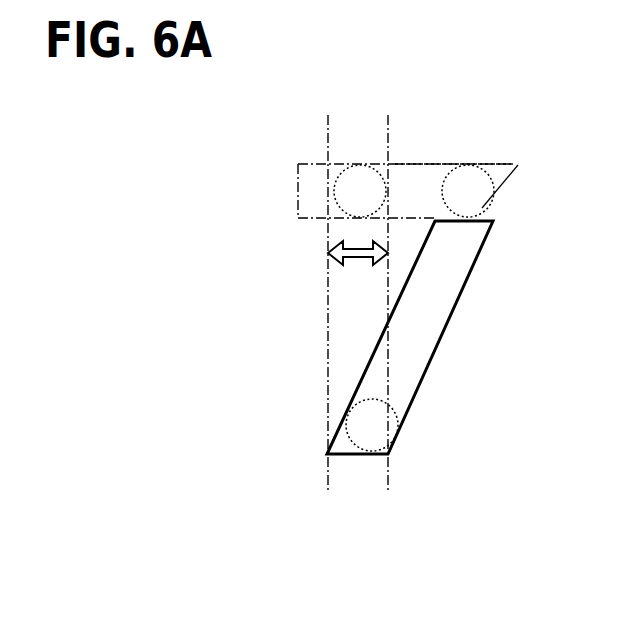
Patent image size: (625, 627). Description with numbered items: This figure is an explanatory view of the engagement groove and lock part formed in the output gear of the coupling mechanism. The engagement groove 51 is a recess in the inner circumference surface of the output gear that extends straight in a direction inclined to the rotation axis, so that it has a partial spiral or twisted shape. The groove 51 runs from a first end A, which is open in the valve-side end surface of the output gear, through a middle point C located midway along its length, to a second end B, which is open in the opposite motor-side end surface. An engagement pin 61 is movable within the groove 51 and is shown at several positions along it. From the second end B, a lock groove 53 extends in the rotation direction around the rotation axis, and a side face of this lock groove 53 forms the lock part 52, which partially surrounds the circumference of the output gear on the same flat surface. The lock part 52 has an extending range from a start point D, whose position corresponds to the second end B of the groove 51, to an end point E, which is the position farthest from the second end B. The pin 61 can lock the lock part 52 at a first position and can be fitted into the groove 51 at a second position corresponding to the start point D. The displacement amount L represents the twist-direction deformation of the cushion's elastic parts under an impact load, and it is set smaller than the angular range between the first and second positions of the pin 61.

The engagement groove 51 is at (425, 364).
The lock part 52 is at (337, 218).
The lock groove 53 is at (430, 162).
The engagement pin 61 is at (380, 167).
The first end A is at (340, 456).
The second end B is at (490, 220).
The middle point C is at (430, 307).
The start point D is at (495, 190).
The end point E is at (297, 208).
The displacement amount in the twist direction L is at (358, 272).